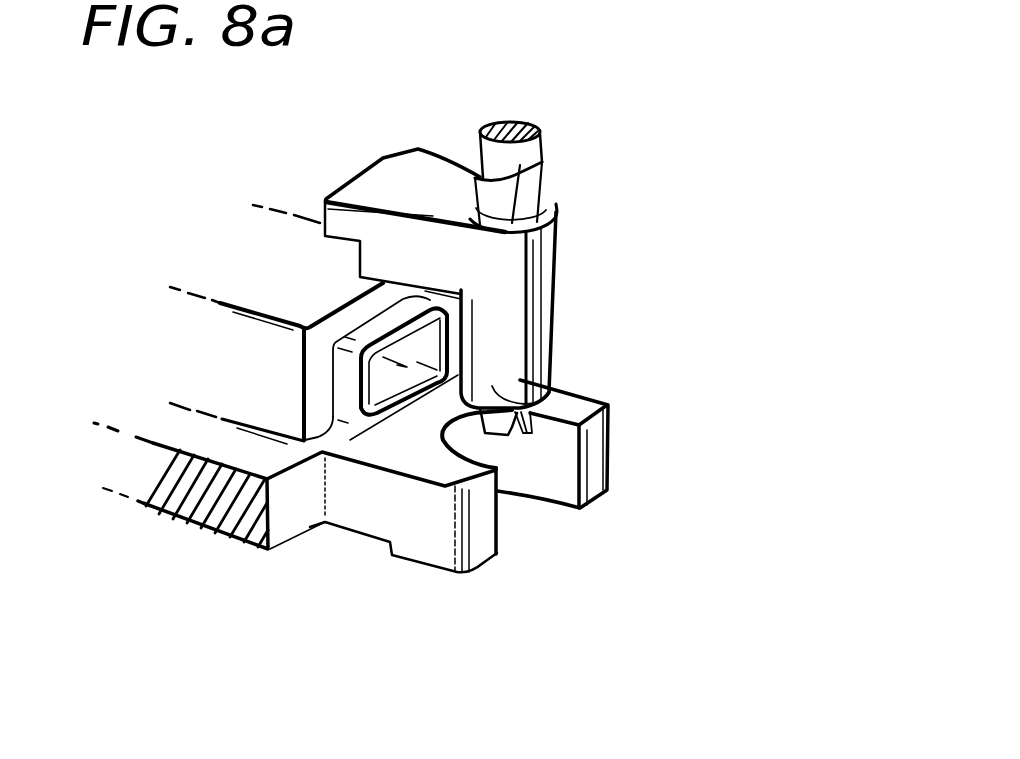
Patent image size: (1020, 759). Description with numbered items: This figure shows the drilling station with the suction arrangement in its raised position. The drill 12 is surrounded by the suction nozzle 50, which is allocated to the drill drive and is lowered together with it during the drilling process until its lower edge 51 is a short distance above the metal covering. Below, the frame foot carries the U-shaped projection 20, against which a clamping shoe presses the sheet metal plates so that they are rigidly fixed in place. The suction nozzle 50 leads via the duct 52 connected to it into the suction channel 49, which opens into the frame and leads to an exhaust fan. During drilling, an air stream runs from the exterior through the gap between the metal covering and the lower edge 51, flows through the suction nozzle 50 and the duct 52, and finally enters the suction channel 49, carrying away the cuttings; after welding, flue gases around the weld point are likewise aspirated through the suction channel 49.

The drill 12 is at (521, 164).
The U-shaped projection 20 is at (483, 549).
The suction channel 49 is at (378, 393).
The suction nozzle 50 is at (537, 297).
The lower edge 51 is at (503, 388).
The duct 52 is at (412, 182).